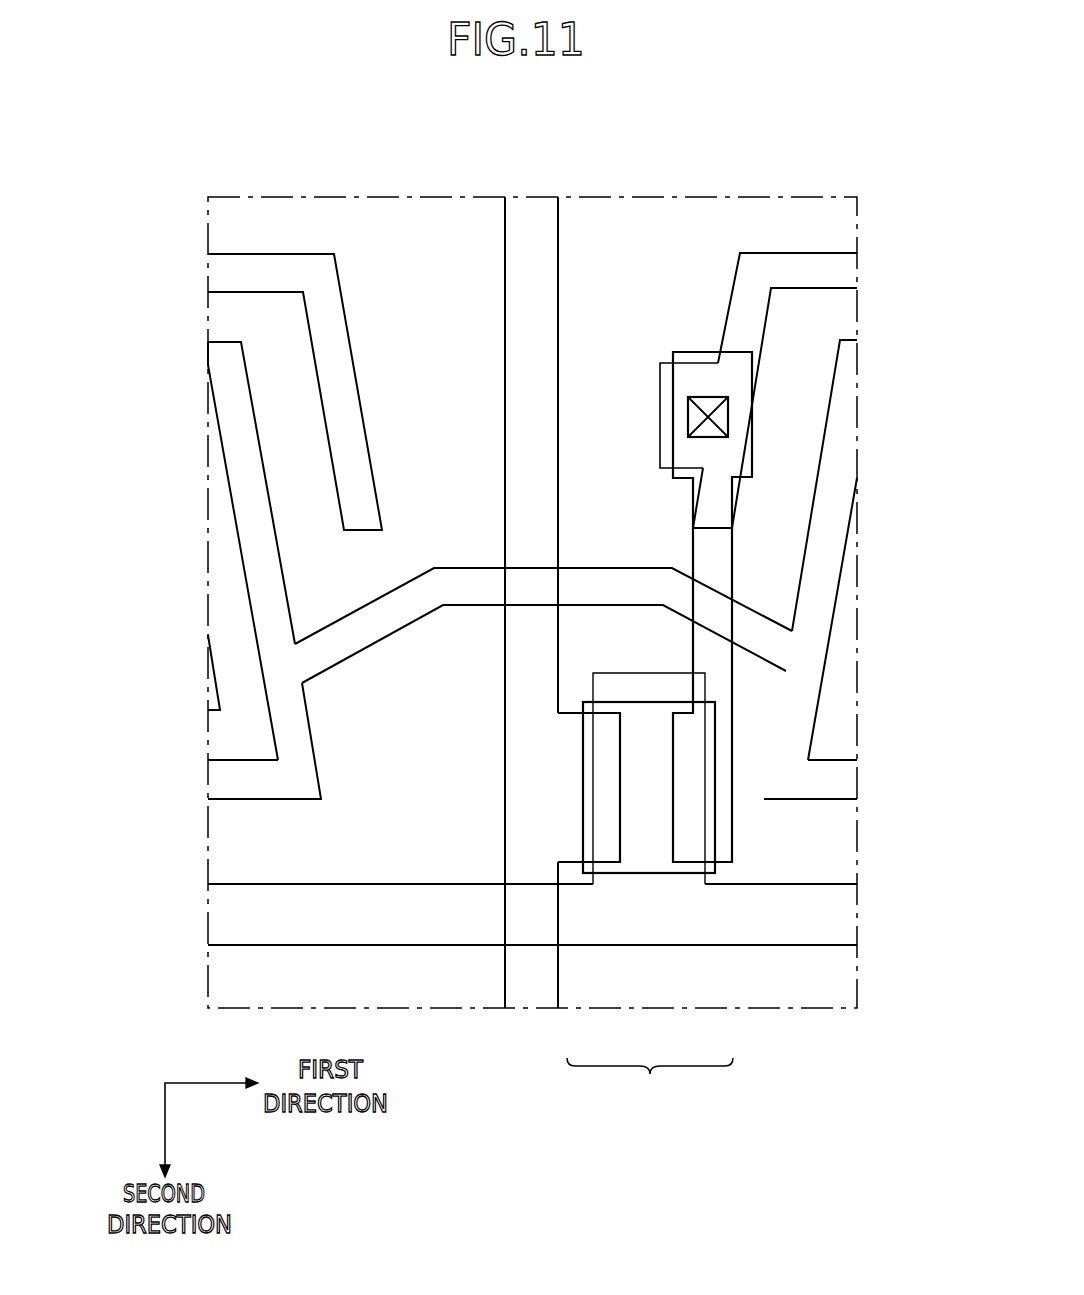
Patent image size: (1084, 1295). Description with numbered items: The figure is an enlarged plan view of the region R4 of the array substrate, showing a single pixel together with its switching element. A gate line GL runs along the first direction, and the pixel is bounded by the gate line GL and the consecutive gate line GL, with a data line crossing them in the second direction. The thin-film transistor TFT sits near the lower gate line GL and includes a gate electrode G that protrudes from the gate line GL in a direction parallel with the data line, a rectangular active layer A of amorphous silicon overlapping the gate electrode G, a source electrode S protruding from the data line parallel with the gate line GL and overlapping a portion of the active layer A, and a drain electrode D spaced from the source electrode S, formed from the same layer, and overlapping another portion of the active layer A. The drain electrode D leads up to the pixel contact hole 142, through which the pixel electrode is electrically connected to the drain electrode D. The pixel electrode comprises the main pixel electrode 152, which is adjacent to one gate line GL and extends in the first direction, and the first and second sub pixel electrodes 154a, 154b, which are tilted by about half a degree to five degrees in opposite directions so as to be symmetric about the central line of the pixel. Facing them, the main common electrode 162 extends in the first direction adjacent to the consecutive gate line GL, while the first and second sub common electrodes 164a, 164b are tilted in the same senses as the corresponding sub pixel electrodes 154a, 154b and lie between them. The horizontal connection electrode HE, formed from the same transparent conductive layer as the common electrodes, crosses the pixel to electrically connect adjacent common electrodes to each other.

The region R4 is at (857, 197).
The gate line GL is at (530, 215).
The main pixel electrode 152 is at (222, 273).
The second sub pixel electrode 154b is at (328, 303).
The first sub pixel electrode 154a is at (745, 300).
The second sub common electrode 164b is at (258, 556).
The first sub common electrode 164a is at (828, 585).
The main common electrode 162 is at (222, 778).
The horizontal connection electrode HE is at (447, 568).
The pixel contact hole 142 is at (700, 416).
The source electrode S is at (576, 853).
The gate electrode G is at (627, 878).
The active layer A is at (660, 853).
The drain electrode D is at (724, 853).
The thin-film transistor TFT is at (650, 1082).